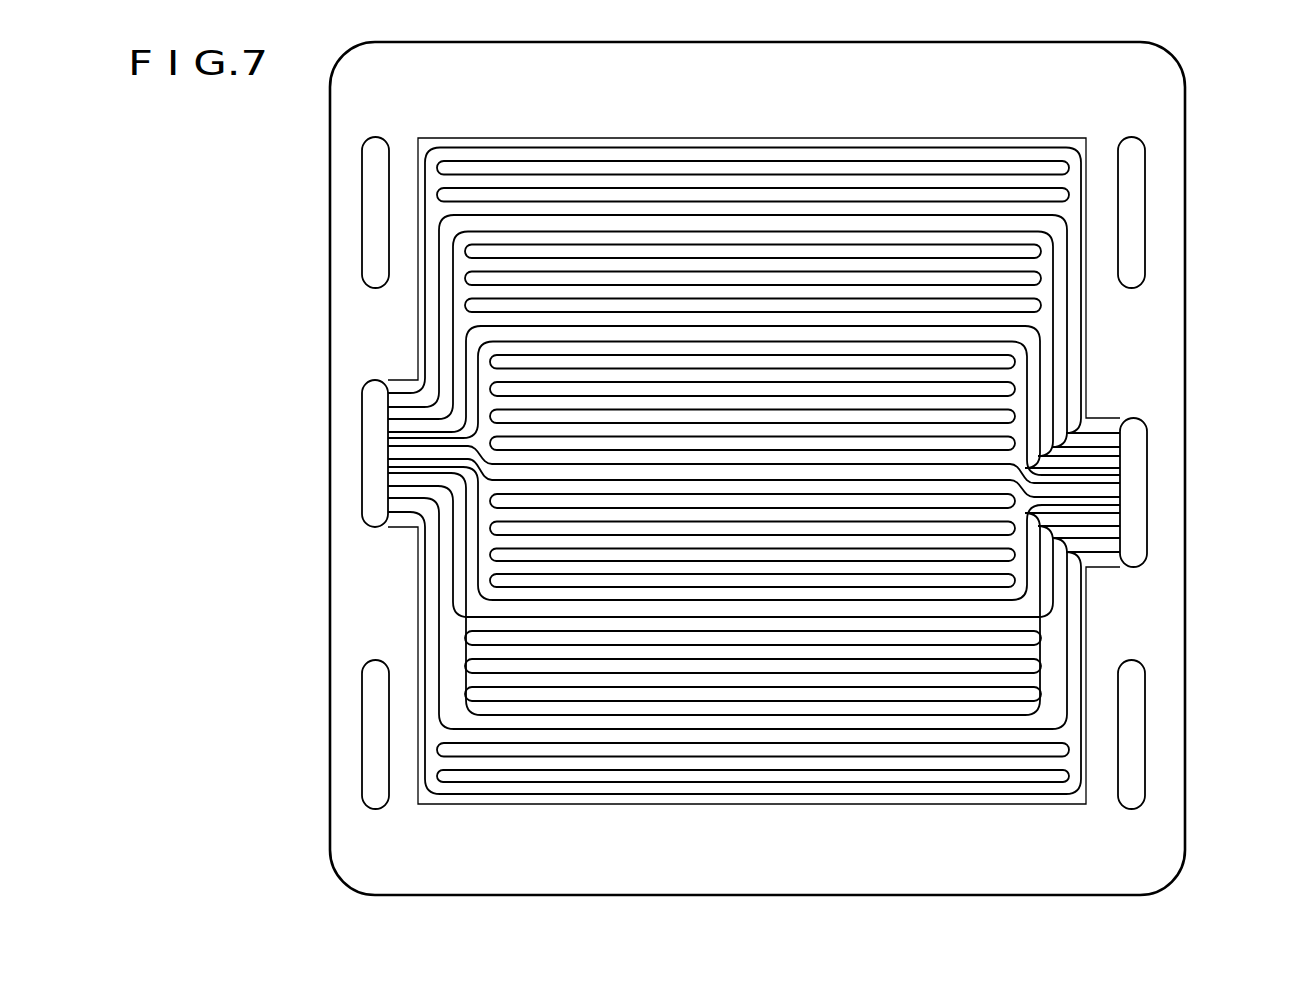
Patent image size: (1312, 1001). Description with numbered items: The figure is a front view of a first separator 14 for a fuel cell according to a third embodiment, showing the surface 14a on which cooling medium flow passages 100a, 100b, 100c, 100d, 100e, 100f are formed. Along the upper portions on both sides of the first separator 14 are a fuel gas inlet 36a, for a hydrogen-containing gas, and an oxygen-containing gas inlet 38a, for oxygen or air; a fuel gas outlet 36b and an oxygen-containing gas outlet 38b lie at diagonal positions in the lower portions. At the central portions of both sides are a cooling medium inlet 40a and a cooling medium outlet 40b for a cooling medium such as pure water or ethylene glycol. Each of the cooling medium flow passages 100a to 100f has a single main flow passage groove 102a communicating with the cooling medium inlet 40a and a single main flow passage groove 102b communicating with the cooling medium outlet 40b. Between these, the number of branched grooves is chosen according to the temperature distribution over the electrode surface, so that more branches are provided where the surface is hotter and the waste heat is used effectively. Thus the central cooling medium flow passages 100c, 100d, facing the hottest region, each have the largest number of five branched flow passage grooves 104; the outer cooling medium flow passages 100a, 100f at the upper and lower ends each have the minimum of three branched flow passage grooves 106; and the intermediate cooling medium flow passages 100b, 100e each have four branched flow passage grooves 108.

The first separator 14 is at (1192, 85).
The surface of separator 14a is at (1175, 108).
The fuel gas inlet 36a is at (1133, 205).
The fuel gas outlet 36b is at (370, 690).
The oxygen-containing gas inlet 38a is at (370, 218).
The oxygen-containing gas outlet 38b is at (1135, 740).
The cooling medium inlet 40a is at (370, 398).
The cooling medium outlet 40b is at (1133, 430).
The cooling medium flow passage 100a is at (612, 135).
The cooling medium flow passage 100b is at (697, 230).
The cooling medium flow passage 100c is at (848, 340).
The cooling medium flow passage 100d is at (545, 570).
The cooling medium flow passage 100e is at (655, 715).
The cooling medium flow passage 100f is at (805, 800).
The main flow passage groove 102a is at (442, 362).
The main flow passage groove 102b is at (1159, 350).
The branched flow passage grooves 104 is at (975, 375).
The branched flow passage grooves 106 is at (521, 181).
The branched flow passage grooves 108 is at (832, 255).